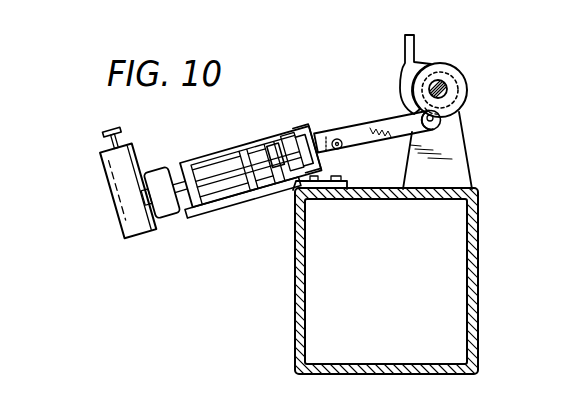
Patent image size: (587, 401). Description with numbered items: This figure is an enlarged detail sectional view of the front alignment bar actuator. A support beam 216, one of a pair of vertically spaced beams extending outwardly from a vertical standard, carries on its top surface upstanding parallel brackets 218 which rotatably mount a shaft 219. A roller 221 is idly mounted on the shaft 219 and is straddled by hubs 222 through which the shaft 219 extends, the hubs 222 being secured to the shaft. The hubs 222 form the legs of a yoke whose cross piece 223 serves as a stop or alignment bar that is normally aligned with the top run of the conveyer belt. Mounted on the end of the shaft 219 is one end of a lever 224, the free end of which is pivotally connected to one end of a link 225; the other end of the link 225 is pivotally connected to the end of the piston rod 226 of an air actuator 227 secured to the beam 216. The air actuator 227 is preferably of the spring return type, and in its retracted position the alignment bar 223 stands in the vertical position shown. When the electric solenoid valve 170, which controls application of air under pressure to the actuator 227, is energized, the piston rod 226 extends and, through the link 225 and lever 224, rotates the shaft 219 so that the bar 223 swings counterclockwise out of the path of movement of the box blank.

The electric solenoid valve 170 is at (123, 208).
The support beam 216 is at (295, 320).
The brackets 218 is at (460, 146).
The shaft 219 is at (447, 84).
The roller 221 is at (467, 97).
The hubs 222 is at (433, 70).
The cross piece (alignment bar) 223 is at (405, 47).
The lever 224 is at (457, 113).
The link 225 is at (362, 134).
The piston rod 226 is at (273, 146).
The air actuator 227 is at (228, 172).